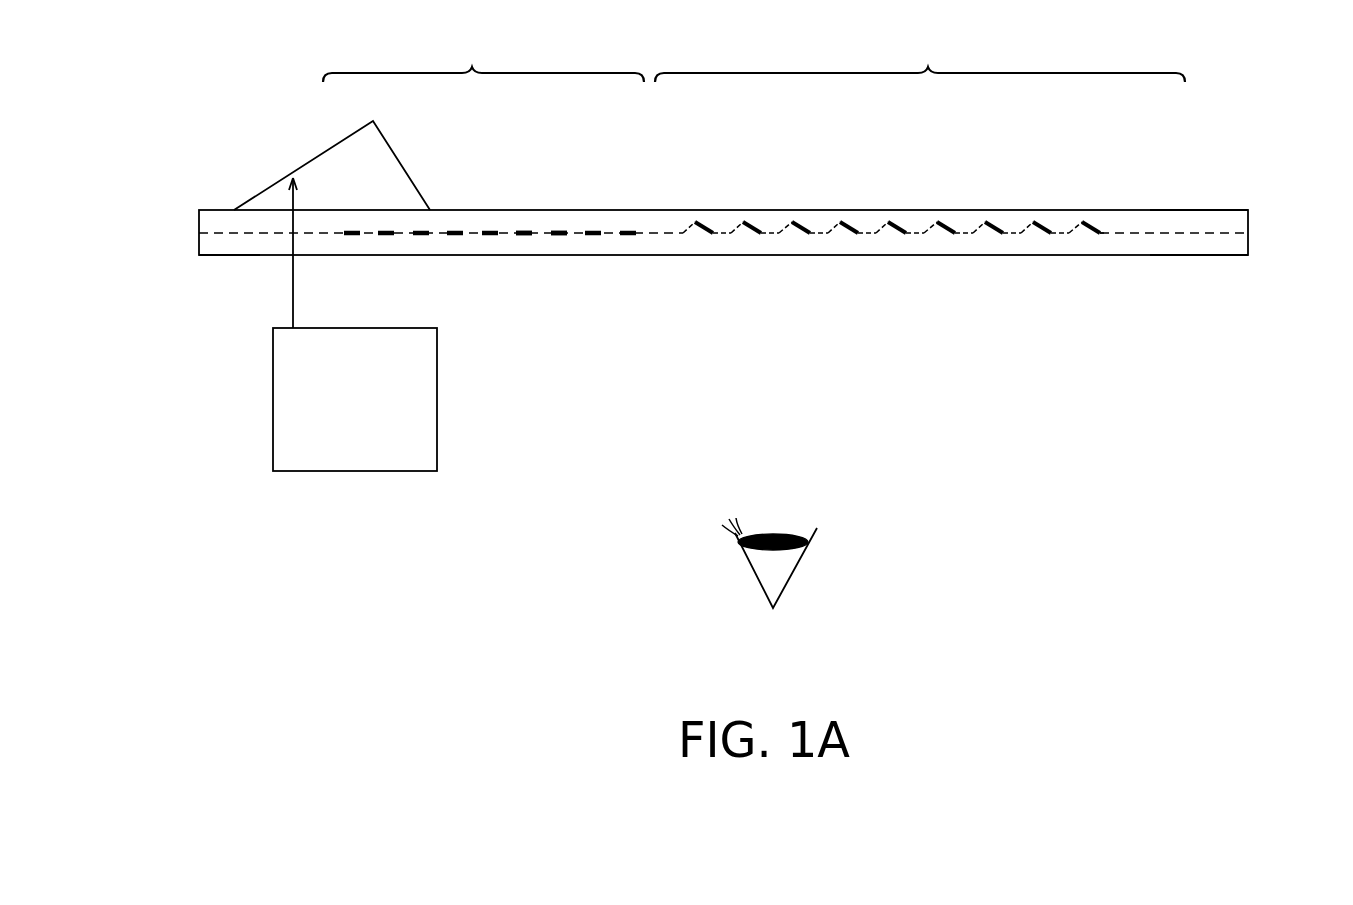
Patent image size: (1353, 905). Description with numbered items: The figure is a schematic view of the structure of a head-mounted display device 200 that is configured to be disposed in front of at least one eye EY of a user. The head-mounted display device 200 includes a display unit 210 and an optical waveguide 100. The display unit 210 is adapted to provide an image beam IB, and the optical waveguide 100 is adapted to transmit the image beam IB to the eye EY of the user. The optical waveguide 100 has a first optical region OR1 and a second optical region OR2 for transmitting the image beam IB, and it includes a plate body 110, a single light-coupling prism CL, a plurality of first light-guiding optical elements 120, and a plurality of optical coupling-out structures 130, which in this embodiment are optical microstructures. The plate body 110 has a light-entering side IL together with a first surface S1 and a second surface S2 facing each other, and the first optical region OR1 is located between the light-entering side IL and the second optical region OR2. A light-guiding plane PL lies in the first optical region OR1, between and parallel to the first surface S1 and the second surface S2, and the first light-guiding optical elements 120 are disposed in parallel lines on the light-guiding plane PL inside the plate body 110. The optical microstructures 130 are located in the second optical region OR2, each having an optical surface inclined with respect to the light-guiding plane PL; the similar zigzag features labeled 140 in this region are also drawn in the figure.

The optical waveguide 100 is at (1118, 155).
The plate body 110 is at (1243, 222).
The first light-guiding optical elements 120 is at (627, 232).
The optical coupling-out structures 130 is at (1051, 218).
The microstructures 140 is at (903, 228).
The head-mounted display device 200 is at (1282, 590).
The display unit 210 is at (437, 400).
The first surface S1 is at (1201, 211).
The second surface S2 is at (1201, 256).
The light-entering side IL is at (220, 257).
The image beam IB is at (293, 300).
The light-coupling prism CL is at (344, 155).
The light-guiding plane PL is at (536, 232).
The first optical region OR1 is at (483, 57).
The second optical region OR2 is at (920, 57).
The eye EY is at (800, 565).